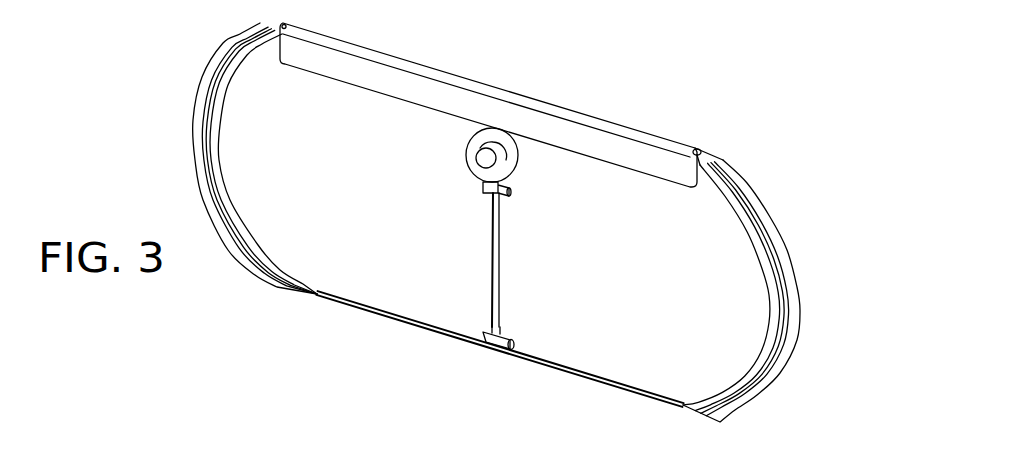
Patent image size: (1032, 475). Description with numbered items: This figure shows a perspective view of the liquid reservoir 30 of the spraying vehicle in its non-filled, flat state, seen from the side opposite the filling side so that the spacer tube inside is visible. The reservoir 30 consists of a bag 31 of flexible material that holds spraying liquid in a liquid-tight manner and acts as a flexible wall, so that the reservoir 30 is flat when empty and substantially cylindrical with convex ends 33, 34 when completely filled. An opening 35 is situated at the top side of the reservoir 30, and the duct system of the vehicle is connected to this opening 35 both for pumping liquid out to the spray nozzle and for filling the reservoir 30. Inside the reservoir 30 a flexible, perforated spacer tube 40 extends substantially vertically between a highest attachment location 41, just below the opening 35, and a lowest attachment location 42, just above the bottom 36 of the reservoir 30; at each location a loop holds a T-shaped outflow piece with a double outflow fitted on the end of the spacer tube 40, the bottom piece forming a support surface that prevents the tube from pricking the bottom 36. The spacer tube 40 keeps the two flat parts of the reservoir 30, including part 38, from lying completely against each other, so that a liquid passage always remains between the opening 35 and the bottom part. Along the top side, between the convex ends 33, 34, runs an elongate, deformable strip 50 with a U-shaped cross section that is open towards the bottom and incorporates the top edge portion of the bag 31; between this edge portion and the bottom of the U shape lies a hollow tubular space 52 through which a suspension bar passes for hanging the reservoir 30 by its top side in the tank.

The reservoir 30 is at (517, 244).
The bag 31 is at (417, 233).
The convex end 33 is at (216, 158).
The convex end 34 is at (797, 311).
The opening 35 is at (477, 157).
The bottom 36 is at (625, 385).
The part of the reservoir 38 is at (265, 156).
The spacer tube 40 is at (497, 258).
The highest attachment location 41 is at (485, 188).
The lowest attachment location 42 is at (487, 331).
The elongate strip 50 is at (549, 103).
The hollow tubular space 52 is at (705, 152).